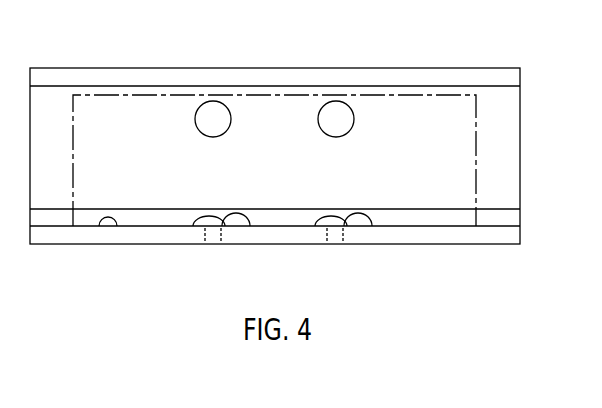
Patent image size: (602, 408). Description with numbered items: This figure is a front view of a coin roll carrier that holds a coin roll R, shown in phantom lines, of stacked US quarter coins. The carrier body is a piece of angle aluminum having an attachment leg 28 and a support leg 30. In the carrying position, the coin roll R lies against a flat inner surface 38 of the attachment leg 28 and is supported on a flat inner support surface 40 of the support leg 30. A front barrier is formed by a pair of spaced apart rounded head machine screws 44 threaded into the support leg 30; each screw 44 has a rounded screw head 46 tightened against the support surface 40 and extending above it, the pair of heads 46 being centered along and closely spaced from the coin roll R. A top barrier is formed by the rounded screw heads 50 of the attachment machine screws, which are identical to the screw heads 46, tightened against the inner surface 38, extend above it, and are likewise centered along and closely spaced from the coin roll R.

The attachment leg 28 is at (520, 117).
The support leg 30 is at (520, 233).
The flat inner surface 38 is at (37, 125).
The coin roll R is at (385, 93).
The rounded screw heads 50 is at (197, 108).
The flat inner support surface 40 is at (116, 226).
The rounded head machine screws 44 is at (201, 222).
The rounded screw head 46 is at (246, 222).